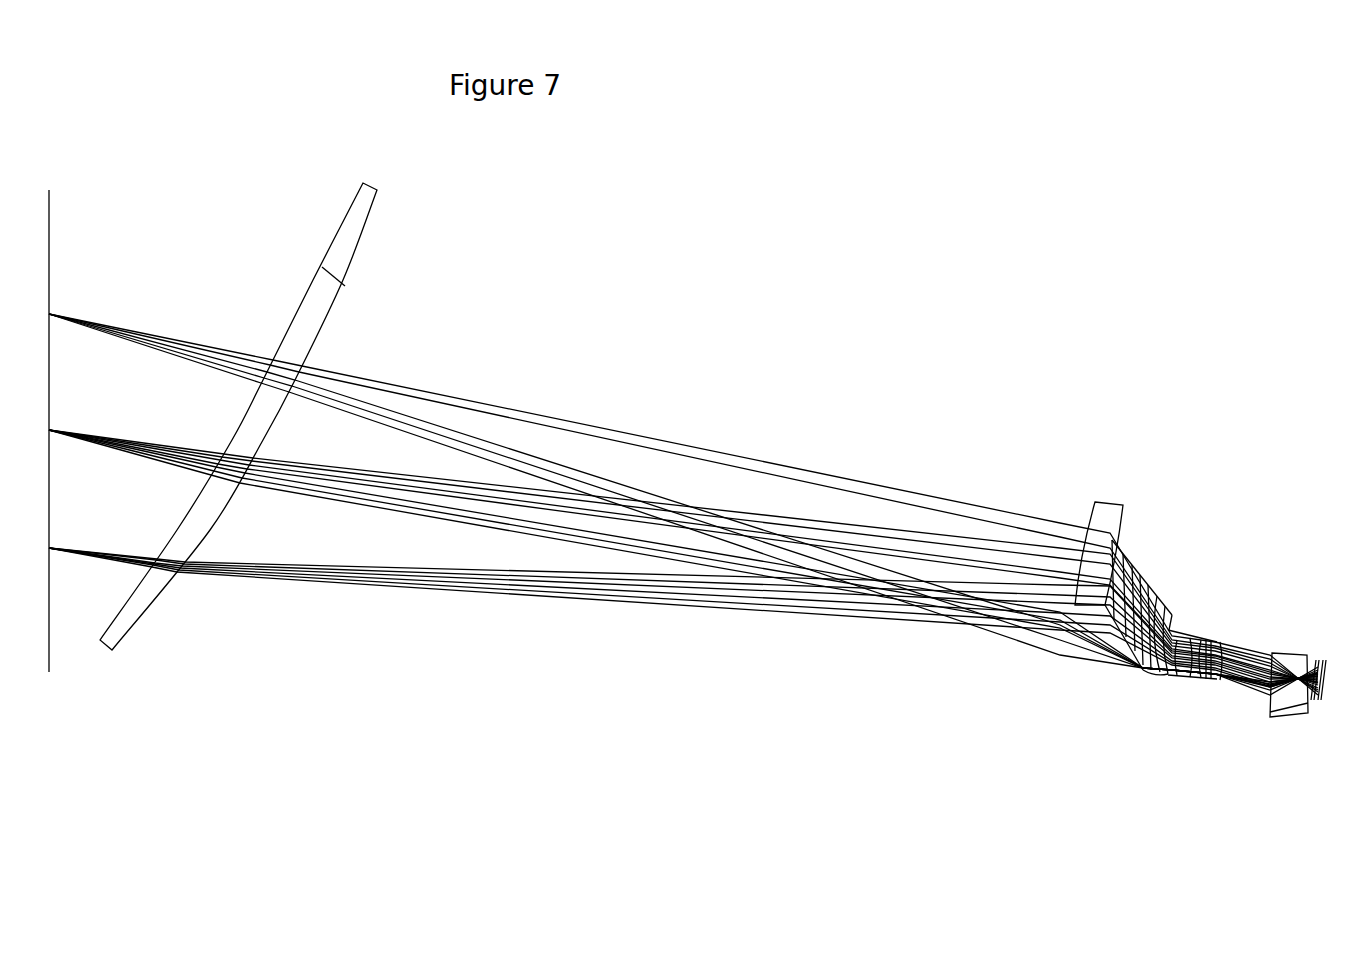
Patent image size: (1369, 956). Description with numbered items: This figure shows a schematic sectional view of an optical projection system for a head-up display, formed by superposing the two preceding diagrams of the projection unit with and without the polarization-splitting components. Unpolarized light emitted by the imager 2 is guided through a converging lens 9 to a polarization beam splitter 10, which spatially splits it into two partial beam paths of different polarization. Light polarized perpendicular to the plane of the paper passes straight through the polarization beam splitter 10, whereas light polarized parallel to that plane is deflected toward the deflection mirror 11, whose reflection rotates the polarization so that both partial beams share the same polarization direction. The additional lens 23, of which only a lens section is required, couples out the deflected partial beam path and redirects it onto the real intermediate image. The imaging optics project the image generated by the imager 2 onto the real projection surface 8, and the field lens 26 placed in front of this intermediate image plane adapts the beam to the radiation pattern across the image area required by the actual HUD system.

The real projection surface 8 is at (62, 222).
The field lens 26 is at (370, 263).
The additional lens 23 is at (1116, 488).
The deflection mirror 11 is at (1142, 564).
The polarization beam splitter 10 is at (1127, 680).
The converging lens 9 is at (1318, 728).
The imager 2 is at (1322, 708).